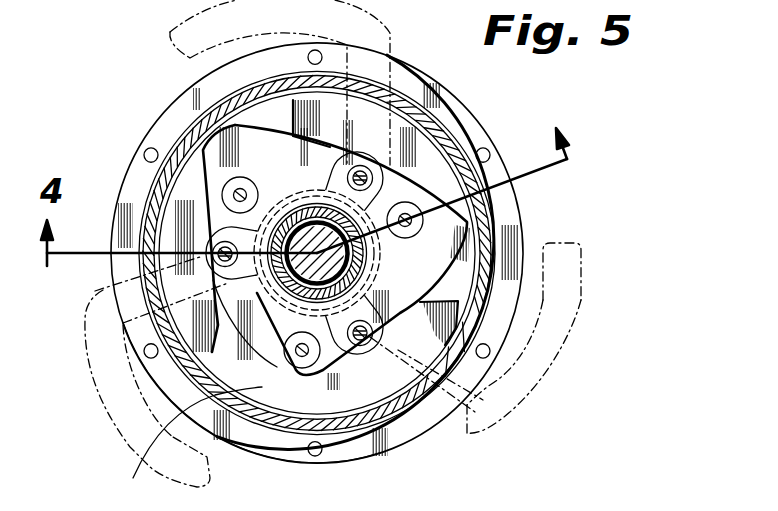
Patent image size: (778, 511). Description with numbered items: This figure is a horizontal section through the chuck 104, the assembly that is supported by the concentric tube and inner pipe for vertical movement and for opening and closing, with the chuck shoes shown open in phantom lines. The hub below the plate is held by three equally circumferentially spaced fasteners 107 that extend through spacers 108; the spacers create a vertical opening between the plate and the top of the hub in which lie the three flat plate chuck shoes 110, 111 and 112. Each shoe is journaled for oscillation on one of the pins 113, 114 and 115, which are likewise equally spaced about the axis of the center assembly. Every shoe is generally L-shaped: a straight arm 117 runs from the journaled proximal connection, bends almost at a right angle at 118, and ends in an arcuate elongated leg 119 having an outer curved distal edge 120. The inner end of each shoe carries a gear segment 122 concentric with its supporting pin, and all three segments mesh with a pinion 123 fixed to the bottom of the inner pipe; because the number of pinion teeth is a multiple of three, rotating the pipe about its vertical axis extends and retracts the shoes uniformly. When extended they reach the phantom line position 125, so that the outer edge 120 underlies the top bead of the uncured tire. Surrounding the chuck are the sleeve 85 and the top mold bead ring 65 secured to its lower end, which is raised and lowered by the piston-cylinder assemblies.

The top mold bead ring 65 is at (412, 68).
The sleeve 85 is at (480, 220).
The chuck 104 is at (566, 182).
The fasteners 107 is at (247, 179).
The spacers 108 is at (412, 172).
The chuck shoe 110 is at (204, 160).
The chuck shoe 111 is at (452, 237).
The chuck shoe 112 is at (173, 376).
The pin 113 is at (361, 165).
The pin 114 is at (369, 344).
The pin 115 is at (200, 282).
The straight arm 117 is at (166, 396).
The bend 118 is at (241, 444).
The arcuate elongated leg 119 is at (358, 447).
The outer curved distal edge 120 is at (583, 292).
The gear segment 122 is at (213, 213).
The pinion 123 is at (350, 250).
The phantom line position 125 is at (523, 403).